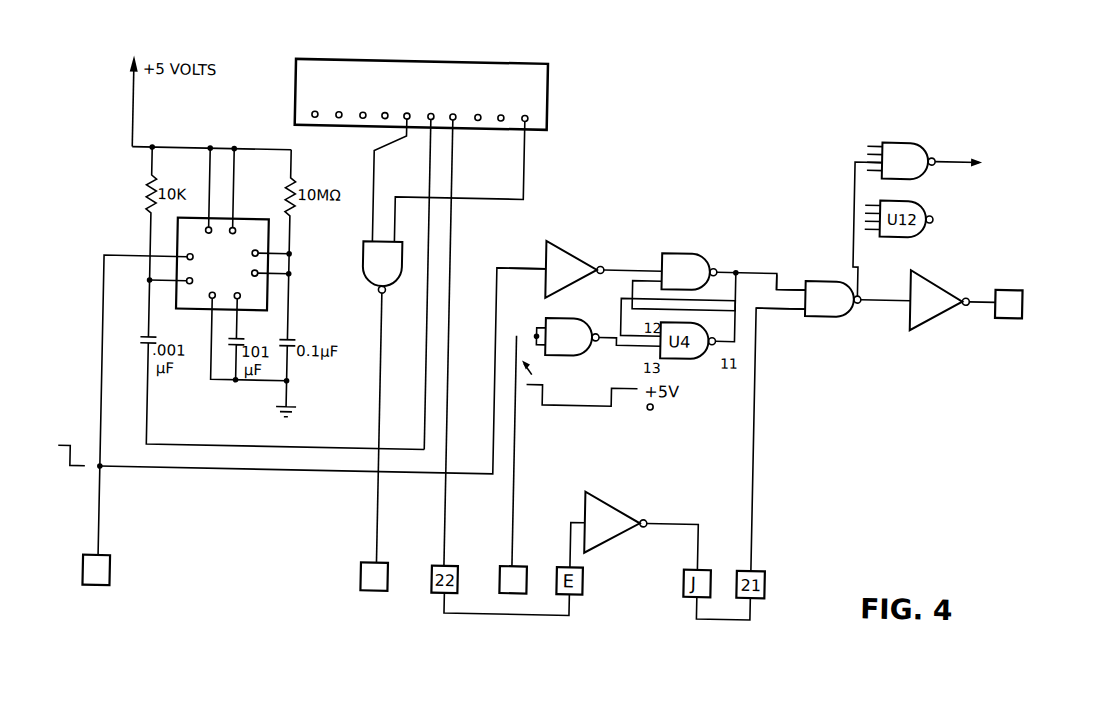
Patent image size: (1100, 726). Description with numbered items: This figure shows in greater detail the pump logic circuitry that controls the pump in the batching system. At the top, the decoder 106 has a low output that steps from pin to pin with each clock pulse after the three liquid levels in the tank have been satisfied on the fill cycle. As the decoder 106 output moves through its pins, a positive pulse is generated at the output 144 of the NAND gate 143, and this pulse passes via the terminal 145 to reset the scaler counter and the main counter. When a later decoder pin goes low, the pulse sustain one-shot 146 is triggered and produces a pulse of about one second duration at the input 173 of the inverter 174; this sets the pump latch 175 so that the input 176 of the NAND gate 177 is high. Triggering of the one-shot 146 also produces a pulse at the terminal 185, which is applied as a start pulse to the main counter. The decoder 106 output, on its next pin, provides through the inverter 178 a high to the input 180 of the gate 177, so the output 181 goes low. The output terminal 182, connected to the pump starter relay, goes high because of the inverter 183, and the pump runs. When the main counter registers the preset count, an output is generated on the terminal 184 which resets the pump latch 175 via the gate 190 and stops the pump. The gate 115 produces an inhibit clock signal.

The decoder 106 is at (542, 82).
The NAND gate U12 producing inhibit clock 115 is at (916, 143).
The NAND gate 143 is at (361, 278).
The output of NAND gate 144 is at (380, 399).
The terminal 145 is at (365, 580).
The pulse sustain one-shot 146 is at (175, 235).
The input of inverter 173 is at (544, 252).
The inverter 174 is at (569, 245).
The pump latch 175 is at (672, 251).
The input of NAND gate 176 is at (804, 276).
The NAND gate 177 is at (831, 311).
The inverter 178 is at (600, 506).
The input of gate 180 is at (790, 304).
The output of NAND gate 181 is at (859, 297).
The output terminal 182 is at (1021, 292).
The inverter 183 is at (911, 318).
The terminal 184 is at (504, 583).
The terminal 185 is at (114, 575).
The gate 190 is at (568, 355).